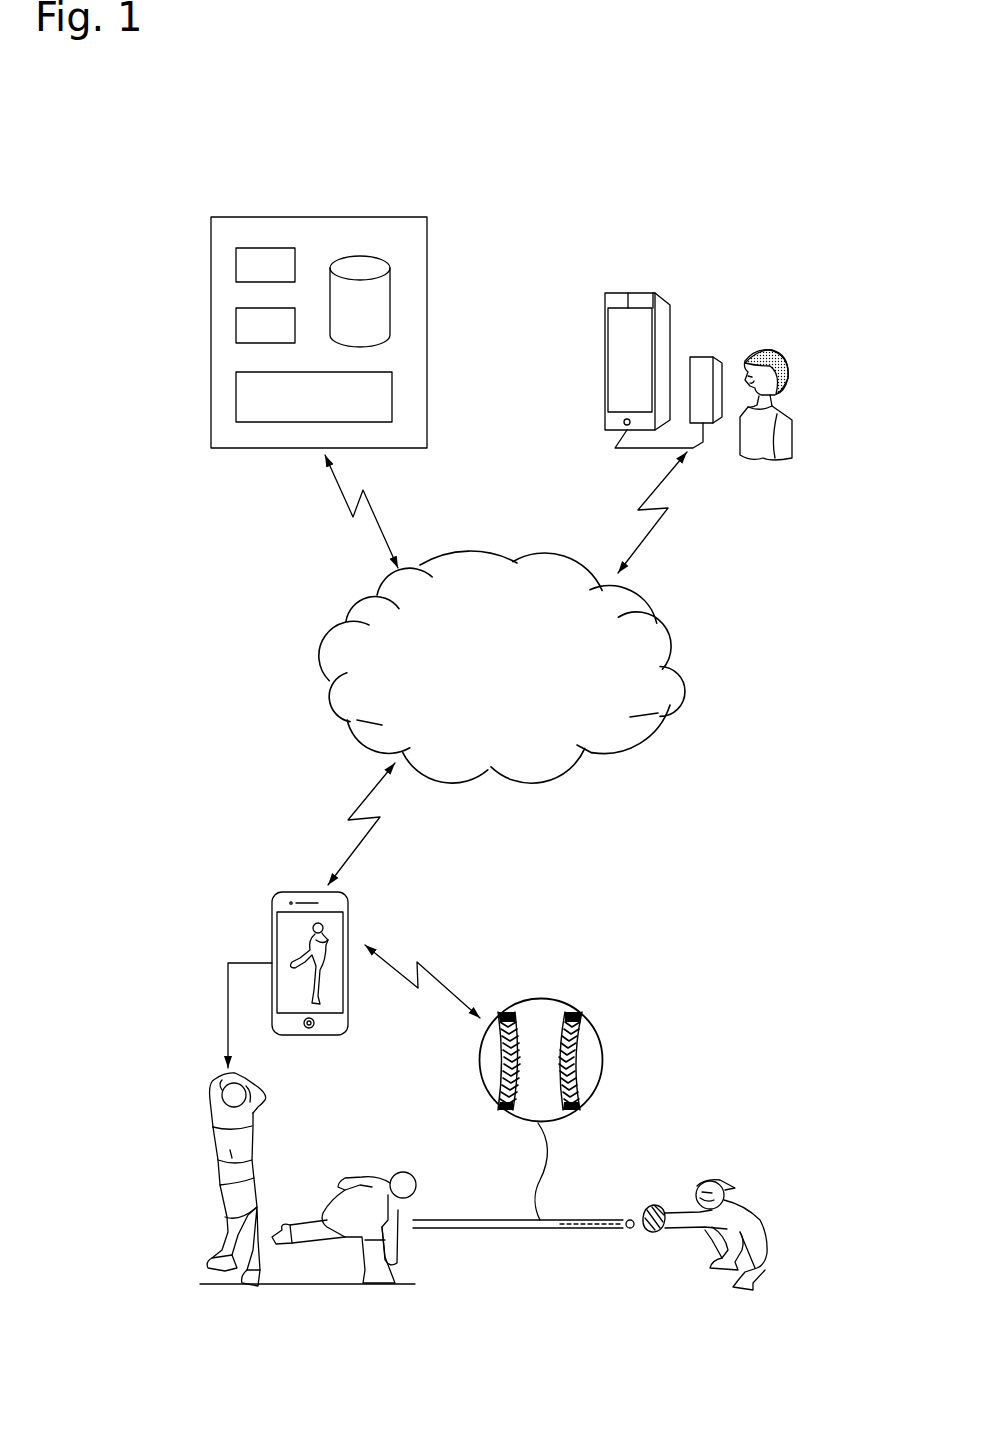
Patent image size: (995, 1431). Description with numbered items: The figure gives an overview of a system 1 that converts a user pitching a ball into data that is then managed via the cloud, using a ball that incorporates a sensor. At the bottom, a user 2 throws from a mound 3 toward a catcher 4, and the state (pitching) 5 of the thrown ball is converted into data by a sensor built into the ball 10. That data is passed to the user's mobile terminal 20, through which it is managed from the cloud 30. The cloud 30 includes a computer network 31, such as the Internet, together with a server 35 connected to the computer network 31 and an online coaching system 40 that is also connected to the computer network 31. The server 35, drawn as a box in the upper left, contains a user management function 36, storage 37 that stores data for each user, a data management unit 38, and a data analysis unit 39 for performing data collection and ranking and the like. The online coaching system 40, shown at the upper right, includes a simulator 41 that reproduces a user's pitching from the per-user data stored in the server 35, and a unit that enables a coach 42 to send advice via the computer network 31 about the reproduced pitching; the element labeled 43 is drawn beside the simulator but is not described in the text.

The system 1 is at (248, 628).
The user 2 is at (212, 1150).
The mound 3 is at (315, 1300).
The catcher 4 is at (757, 1208).
The state (pitching) 5 is at (577, 1232).
The ball 10 is at (603, 1062).
The mobile terminal 20 is at (348, 912).
The cloud 30 is at (542, 671).
The computer network 31 is at (668, 684).
The server 35 is at (329, 332).
The user management function 36 is at (250, 265).
The storage 37 is at (382, 300).
The data management unit 38 is at (250, 325).
The data analysis unit 39 is at (382, 396).
The online coaching system 40 is at (707, 403).
The simulator 41 is at (618, 360).
The coach 42 is at (797, 402).
The terminal body 43 is at (703, 355).